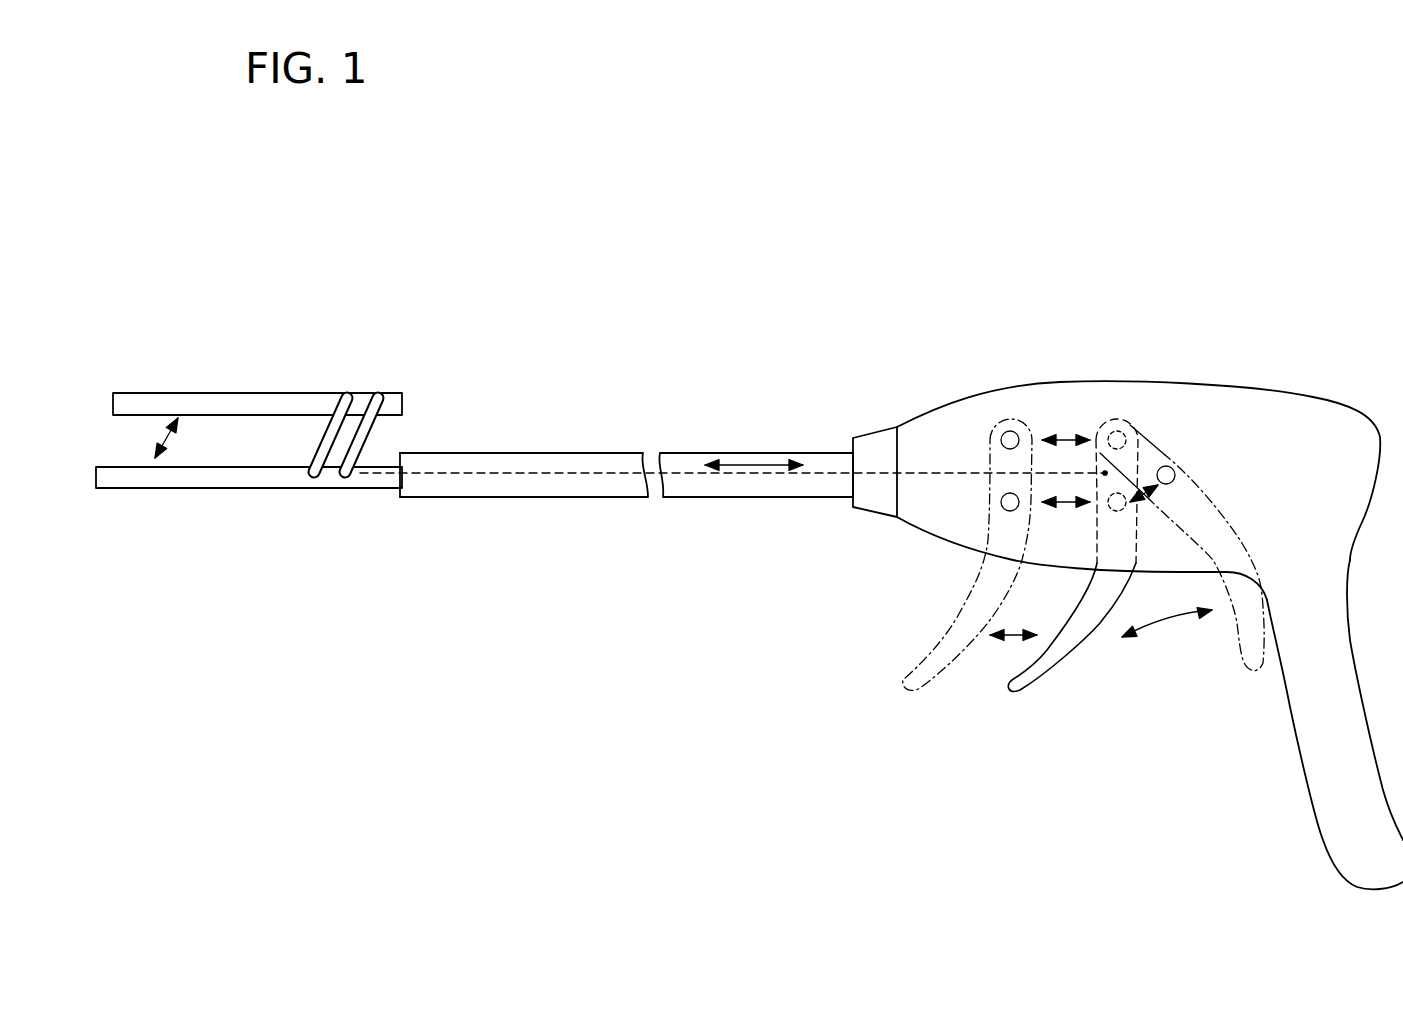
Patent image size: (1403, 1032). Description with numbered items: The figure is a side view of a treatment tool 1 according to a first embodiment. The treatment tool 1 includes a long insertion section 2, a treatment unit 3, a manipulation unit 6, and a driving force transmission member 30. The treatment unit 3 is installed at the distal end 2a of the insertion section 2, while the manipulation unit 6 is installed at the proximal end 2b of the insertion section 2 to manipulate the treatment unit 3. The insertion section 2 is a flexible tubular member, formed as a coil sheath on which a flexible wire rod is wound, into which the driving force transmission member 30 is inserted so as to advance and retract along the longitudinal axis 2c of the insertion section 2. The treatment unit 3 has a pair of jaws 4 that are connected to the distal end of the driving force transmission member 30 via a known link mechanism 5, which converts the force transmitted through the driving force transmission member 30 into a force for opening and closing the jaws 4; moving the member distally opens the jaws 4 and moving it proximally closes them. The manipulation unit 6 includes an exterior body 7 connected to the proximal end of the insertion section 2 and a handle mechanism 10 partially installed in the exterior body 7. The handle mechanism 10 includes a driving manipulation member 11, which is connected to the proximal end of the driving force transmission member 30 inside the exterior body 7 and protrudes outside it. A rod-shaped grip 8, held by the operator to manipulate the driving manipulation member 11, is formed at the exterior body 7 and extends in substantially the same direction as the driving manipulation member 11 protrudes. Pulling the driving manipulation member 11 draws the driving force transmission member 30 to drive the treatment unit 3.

The treatment tool 1 is at (1017, 238).
The insertion section 2 is at (738, 448).
The distal end 2a is at (410, 492).
The proximal end 2b is at (845, 487).
The longitudinal axis 2c is at (757, 467).
The treatment unit 3 is at (325, 367).
The pair of jaws 4 is at (232, 478).
The link mechanism 5 is at (387, 437).
The manipulation unit 6 is at (1247, 370).
The exterior body 7 is at (1318, 403).
The grip 8 is at (1307, 740).
The handle mechanism 10 is at (913, 615).
The driving manipulation member 11 is at (1250, 617).
The driving force transmission member 30 is at (545, 473).